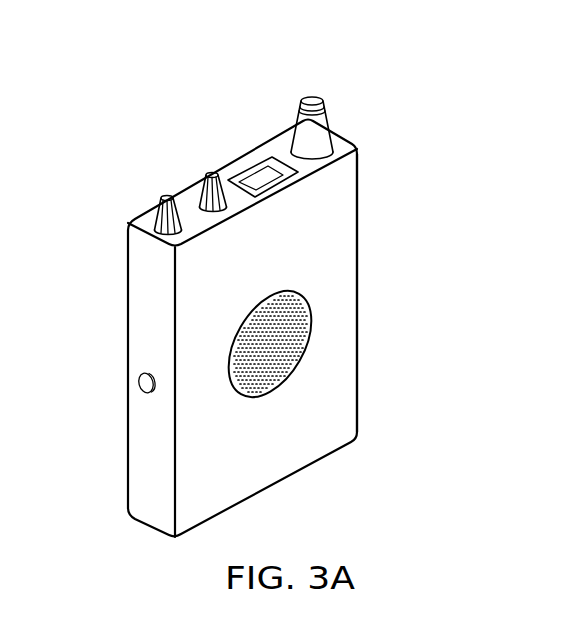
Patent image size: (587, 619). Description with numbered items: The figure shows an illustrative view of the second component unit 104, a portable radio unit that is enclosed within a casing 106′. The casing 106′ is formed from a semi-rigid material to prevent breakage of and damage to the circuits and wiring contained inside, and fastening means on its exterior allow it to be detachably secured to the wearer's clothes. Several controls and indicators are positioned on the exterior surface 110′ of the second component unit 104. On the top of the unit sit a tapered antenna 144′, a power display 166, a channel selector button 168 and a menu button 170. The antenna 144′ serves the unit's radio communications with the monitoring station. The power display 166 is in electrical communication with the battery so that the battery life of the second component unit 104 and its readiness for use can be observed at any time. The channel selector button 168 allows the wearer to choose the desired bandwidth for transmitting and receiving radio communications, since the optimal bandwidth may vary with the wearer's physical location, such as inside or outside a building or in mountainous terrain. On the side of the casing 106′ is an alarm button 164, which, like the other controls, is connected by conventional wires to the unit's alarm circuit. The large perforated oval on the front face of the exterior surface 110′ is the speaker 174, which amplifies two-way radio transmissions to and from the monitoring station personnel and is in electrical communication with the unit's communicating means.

The second component unit 104 is at (446, 133).
The casing 106′ is at (134, 344).
The exterior surface 110′ is at (345, 255).
The antenna 144′ is at (315, 100).
The alarm button 164 is at (142, 384).
The power display 166 is at (265, 179).
The channel selector button 168 is at (211, 173).
The menu button 170 is at (167, 195).
The speaker 174 is at (290, 345).